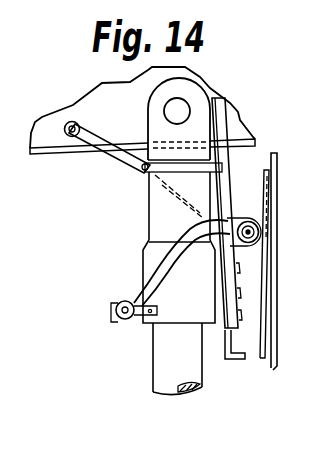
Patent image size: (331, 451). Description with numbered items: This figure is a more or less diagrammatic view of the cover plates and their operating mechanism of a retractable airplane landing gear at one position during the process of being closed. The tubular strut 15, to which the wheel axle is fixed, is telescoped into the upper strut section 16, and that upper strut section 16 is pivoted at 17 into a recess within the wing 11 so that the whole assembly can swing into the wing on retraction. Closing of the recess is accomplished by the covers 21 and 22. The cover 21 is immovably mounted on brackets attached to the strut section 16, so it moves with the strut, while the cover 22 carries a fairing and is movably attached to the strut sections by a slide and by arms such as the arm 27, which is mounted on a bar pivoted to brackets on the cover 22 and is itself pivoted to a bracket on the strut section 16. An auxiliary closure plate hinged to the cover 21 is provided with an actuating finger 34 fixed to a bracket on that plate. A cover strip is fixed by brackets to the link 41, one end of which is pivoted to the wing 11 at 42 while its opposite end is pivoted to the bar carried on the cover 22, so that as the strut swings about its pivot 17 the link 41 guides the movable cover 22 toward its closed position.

The wing section 11 is at (237, 122).
The tubular strut 15 is at (150, 359).
The upper strut section 16 is at (158, 207).
The pivot 17 is at (178, 110).
The cover 21 is at (222, 177).
The cover 22 is at (275, 312).
The arm 27 is at (182, 245).
The actuating finger 34 is at (233, 362).
The link 41 is at (113, 157).
The pivot 42 is at (66, 123).